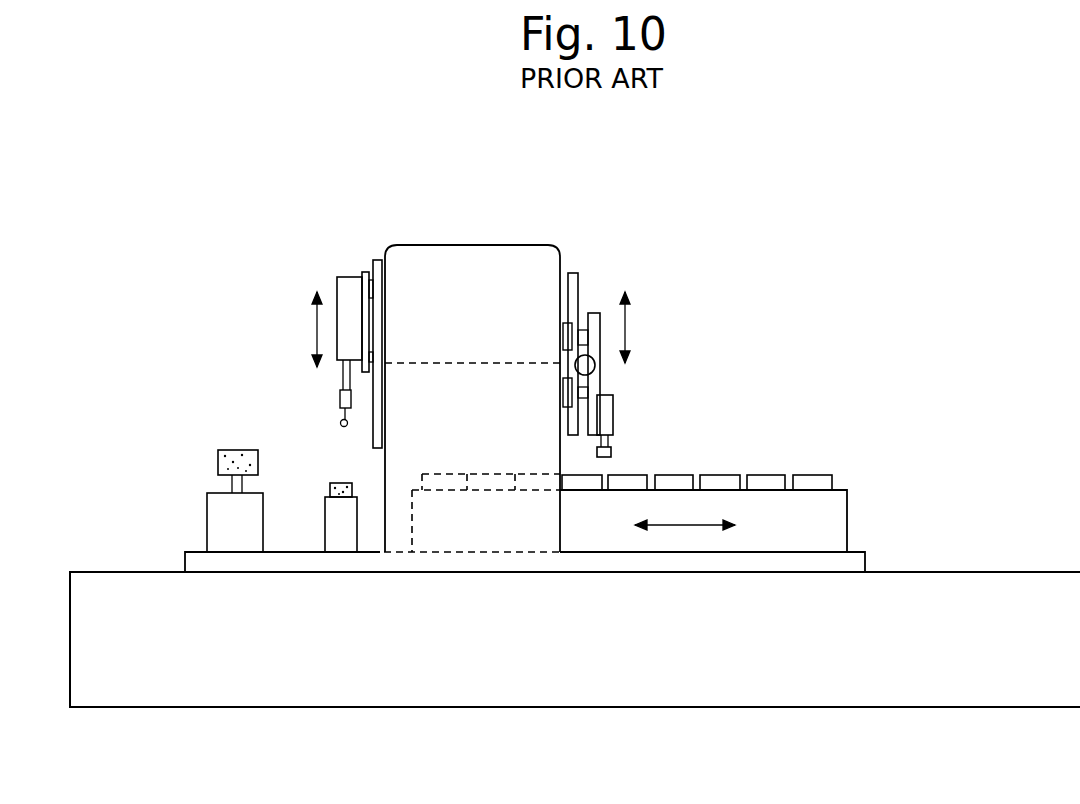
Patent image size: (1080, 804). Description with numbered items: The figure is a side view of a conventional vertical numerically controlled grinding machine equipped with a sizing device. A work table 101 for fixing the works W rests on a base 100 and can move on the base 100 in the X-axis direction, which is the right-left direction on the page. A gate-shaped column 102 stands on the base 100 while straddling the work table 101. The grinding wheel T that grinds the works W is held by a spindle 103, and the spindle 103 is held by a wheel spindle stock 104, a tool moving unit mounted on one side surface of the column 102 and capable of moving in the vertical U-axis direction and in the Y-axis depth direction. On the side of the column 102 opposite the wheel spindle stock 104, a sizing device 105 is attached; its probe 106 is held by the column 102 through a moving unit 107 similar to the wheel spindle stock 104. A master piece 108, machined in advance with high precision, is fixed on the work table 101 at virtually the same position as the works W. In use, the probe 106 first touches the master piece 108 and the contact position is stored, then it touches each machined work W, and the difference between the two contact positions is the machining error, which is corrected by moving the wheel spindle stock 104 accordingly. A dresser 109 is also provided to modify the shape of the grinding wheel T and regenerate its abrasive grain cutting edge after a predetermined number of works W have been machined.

The base 100 is at (737, 708).
The work table 101 is at (837, 517).
The column 102 is at (545, 245).
The spindle 103 is at (615, 400).
The wheel spindle stock 104 is at (592, 310).
The sizing device 105 is at (340, 290).
The probe 106 is at (340, 422).
The moving unit 107 is at (368, 270).
The master piece 108 is at (333, 483).
The dresser 109 is at (218, 460).
The work W is at (818, 473).
The grinding wheel T is at (614, 452).